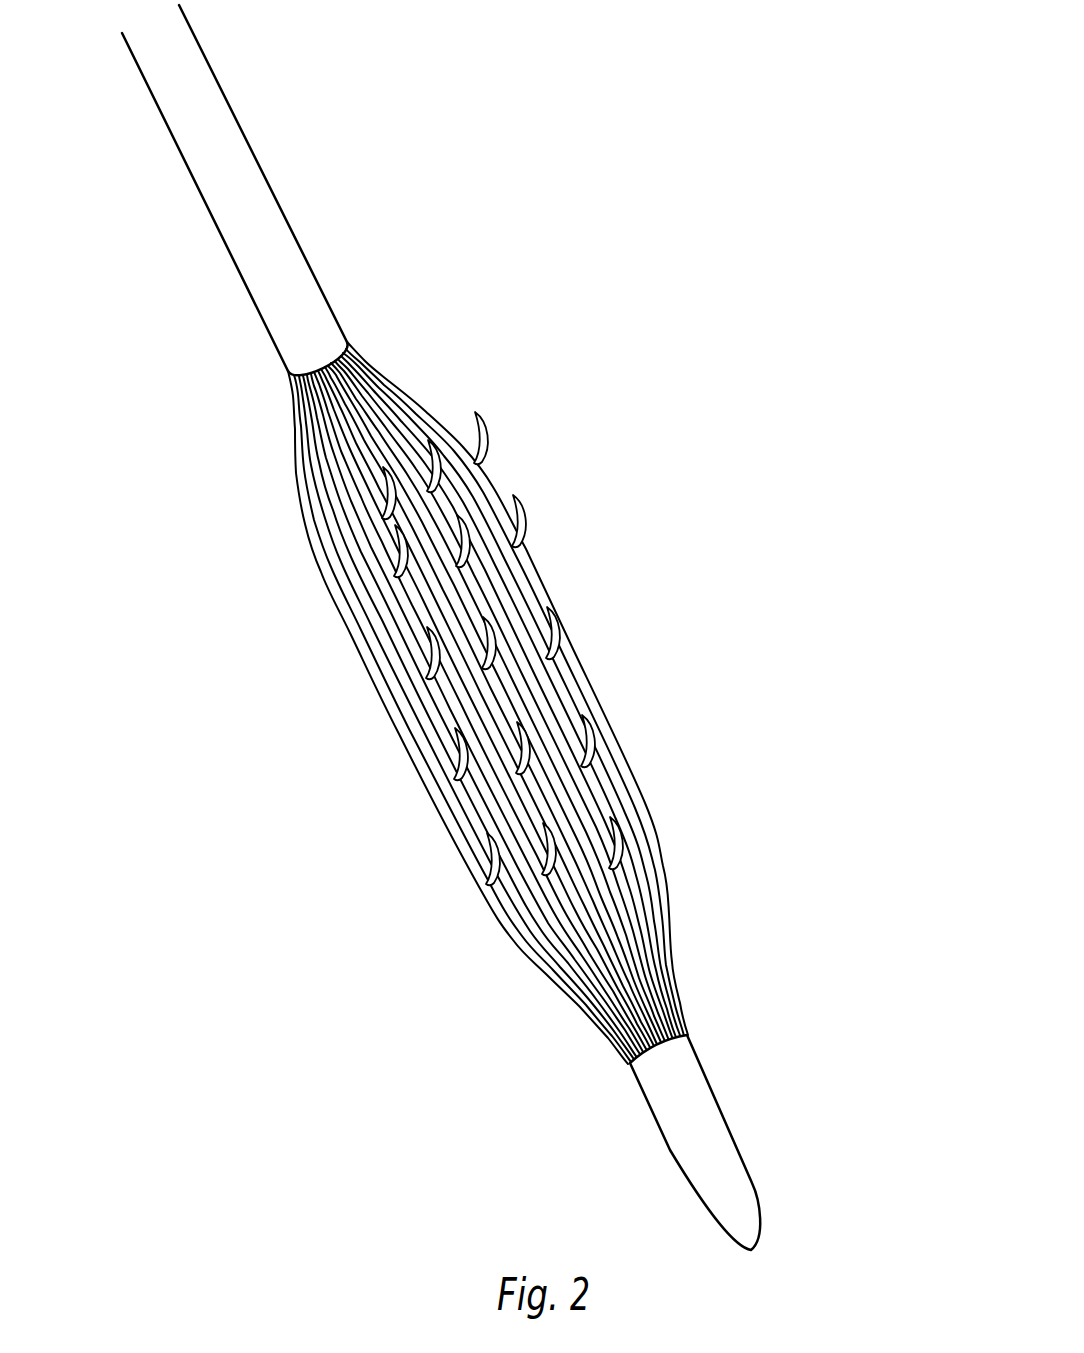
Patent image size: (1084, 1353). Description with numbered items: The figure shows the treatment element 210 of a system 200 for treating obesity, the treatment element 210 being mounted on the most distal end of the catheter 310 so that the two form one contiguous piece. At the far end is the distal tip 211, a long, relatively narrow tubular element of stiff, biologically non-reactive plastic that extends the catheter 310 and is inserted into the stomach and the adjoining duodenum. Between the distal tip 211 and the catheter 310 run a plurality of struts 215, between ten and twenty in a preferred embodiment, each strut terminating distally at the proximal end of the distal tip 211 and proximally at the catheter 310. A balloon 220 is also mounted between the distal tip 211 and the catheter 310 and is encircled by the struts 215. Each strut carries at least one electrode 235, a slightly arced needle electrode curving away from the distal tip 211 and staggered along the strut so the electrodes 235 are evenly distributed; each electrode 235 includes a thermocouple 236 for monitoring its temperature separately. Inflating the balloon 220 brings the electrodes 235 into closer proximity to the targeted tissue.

The system 200 is at (684, 211).
The catheter 310 is at (260, 164).
The balloon 220 is at (430, 400).
The struts 215 is at (393, 645).
The treatment element 210 is at (579, 766).
The thermocouple 236 is at (485, 842).
The electrode 235 is at (468, 878).
The distal tip 211 is at (668, 1147).